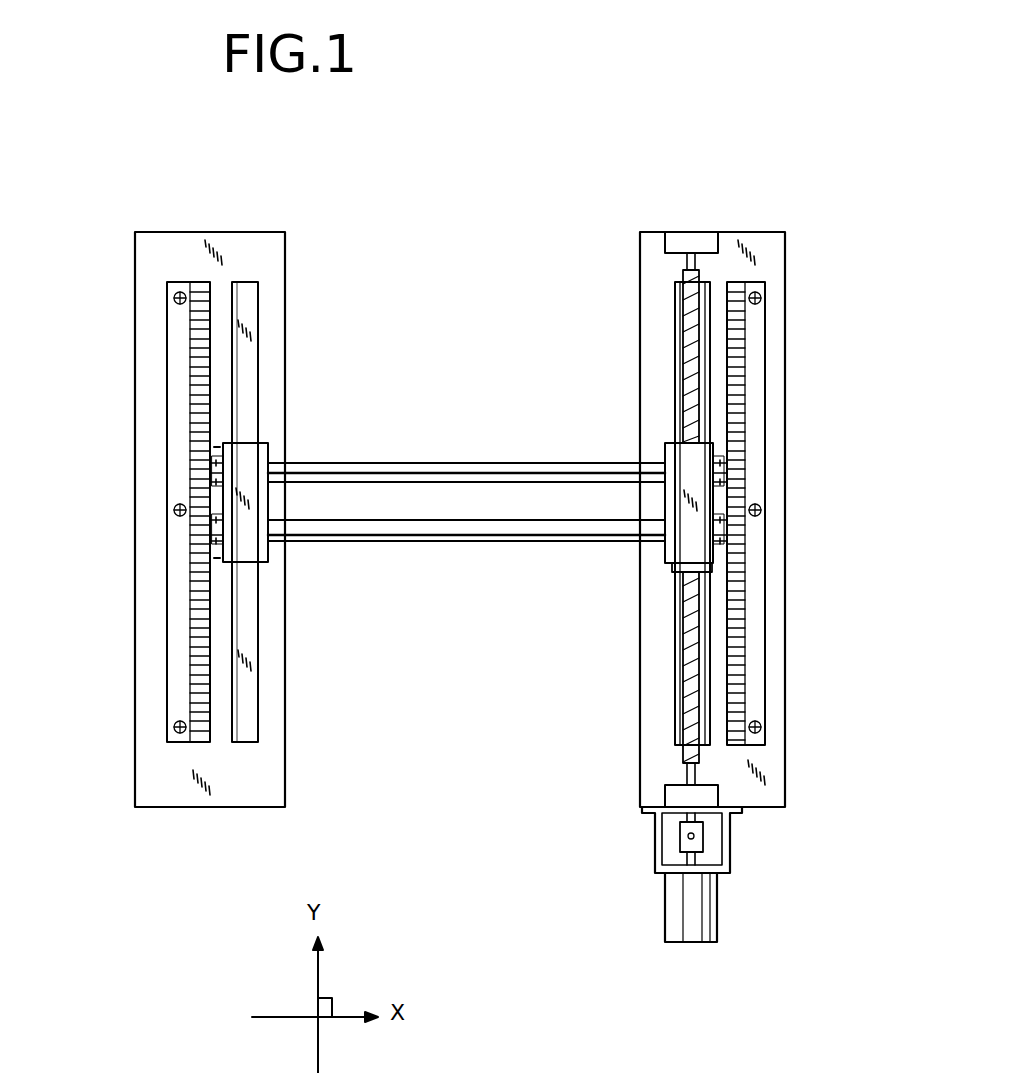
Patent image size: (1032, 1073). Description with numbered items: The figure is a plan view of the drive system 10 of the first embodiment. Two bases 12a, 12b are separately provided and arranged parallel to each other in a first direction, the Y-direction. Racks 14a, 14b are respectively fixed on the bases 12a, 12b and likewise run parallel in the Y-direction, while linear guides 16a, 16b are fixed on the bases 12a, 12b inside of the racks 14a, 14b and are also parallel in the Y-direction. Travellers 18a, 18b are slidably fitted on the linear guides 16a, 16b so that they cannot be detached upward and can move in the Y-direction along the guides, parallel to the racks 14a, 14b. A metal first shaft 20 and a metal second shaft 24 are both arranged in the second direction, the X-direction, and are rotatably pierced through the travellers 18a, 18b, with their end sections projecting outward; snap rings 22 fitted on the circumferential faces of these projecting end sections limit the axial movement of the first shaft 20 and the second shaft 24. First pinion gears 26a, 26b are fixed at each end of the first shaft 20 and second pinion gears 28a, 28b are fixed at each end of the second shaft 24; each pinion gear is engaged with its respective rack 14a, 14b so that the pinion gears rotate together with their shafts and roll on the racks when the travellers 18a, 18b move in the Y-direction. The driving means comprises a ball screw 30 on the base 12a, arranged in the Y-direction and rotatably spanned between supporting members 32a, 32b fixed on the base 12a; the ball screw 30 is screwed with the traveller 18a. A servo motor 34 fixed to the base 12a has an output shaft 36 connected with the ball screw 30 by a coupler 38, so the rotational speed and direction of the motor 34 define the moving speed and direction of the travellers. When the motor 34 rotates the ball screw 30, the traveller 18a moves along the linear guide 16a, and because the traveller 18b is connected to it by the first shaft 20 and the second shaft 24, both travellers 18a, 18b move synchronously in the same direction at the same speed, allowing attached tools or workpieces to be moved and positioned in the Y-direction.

The drive system 10 is at (516, 215).
The base 12a is at (787, 768).
The base 12b is at (135, 694).
The rack 14a is at (745, 397).
The rack 14b is at (198, 400).
The linear guide 16a is at (675, 725).
The linear guide 16b is at (245, 742).
The traveller 18a is at (667, 502).
The traveller 18b is at (260, 452).
The first shaft 20 is at (497, 463).
The snap ring 22 is at (215, 452).
The second shaft 24 is at (407, 541).
The first pinion gear 26a is at (745, 472).
The first pinion gear 26b is at (200, 472).
The second pinion gear 28a is at (745, 540).
The second pinion gear 28b is at (200, 533).
The ball screw 30 is at (700, 277).
The supporting member 32a is at (693, 245).
The supporting member 32b is at (683, 800).
The servo motor 34 is at (694, 945).
The output shaft 36 is at (683, 855).
The coupler 38 is at (700, 835).